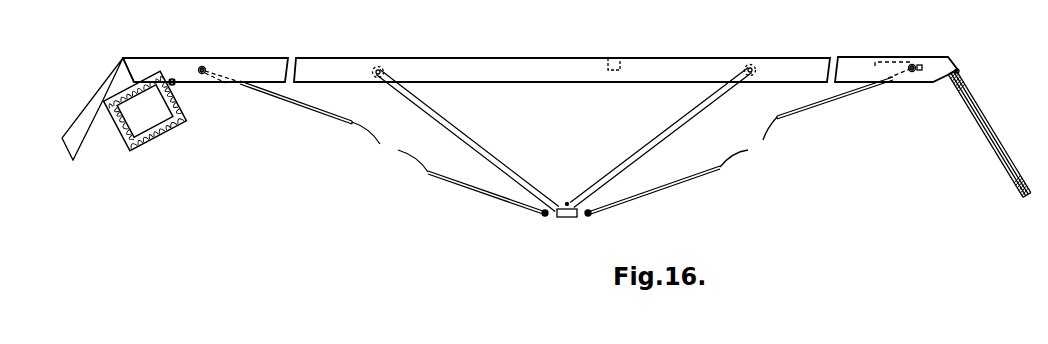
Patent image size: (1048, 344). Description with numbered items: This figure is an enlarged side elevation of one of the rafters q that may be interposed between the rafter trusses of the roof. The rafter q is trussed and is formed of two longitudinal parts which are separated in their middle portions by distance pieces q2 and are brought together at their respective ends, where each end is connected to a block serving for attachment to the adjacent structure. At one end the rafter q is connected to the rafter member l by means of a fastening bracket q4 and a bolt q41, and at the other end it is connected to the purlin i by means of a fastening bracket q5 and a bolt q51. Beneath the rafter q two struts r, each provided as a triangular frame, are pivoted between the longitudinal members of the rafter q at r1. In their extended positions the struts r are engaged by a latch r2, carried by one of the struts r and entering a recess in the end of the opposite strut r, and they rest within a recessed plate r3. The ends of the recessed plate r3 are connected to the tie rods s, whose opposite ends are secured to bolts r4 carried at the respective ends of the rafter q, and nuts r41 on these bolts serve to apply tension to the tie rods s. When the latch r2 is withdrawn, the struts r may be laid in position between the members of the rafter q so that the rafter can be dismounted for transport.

The rafter q is at (342, 57).
The distance piece q2 is at (617, 57).
The fastening bracket q4 is at (173, 85).
The bolt q41 is at (172, 80).
The fastening bracket q5 is at (947, 77).
The bolt q51 is at (958, 70).
The rafter member l is at (173, 118).
The strut r is at (453, 138).
The pivot r1 is at (378, 76).
The latch r2 is at (568, 202).
The recessed plate r3 is at (565, 217).
The bolt r4 is at (203, 75).
The nut r41 is at (203, 67).
The tie rod s is at (566, 146).
The purlin i is at (955, 85).